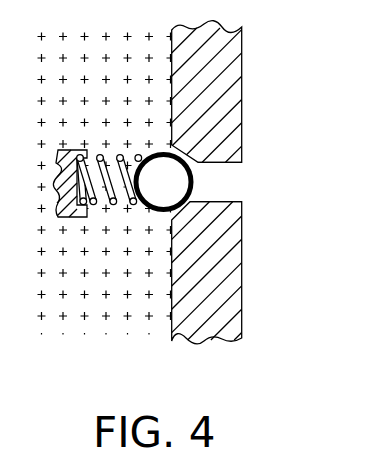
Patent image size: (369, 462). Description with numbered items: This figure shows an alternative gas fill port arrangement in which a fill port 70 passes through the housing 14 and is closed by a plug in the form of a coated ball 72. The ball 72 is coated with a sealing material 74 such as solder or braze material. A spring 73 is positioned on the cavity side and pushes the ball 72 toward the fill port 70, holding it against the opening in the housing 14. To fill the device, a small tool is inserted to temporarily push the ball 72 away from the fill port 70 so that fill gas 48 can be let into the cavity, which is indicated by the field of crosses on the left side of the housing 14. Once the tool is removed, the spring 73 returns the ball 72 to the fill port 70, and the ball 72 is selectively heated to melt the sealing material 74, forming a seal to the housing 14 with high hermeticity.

The housing 14 is at (242, 77).
The fill gas 48 is at (108, 64).
The fill port 70 is at (230, 162).
The coated ball 72 is at (160, 183).
The spring 73 is at (112, 205).
The sealing material 74 is at (197, 182).